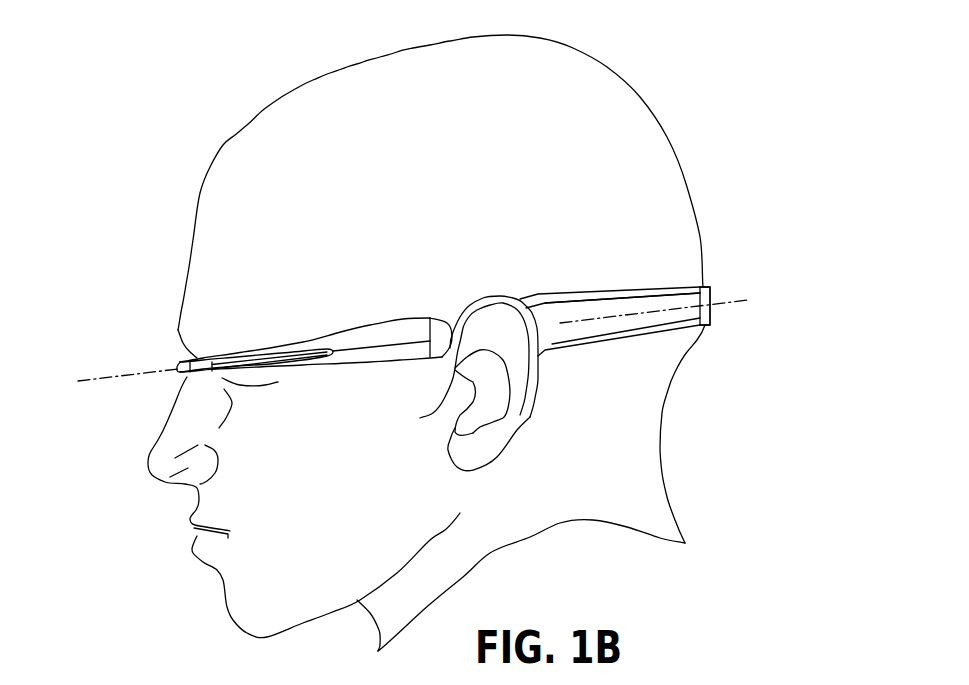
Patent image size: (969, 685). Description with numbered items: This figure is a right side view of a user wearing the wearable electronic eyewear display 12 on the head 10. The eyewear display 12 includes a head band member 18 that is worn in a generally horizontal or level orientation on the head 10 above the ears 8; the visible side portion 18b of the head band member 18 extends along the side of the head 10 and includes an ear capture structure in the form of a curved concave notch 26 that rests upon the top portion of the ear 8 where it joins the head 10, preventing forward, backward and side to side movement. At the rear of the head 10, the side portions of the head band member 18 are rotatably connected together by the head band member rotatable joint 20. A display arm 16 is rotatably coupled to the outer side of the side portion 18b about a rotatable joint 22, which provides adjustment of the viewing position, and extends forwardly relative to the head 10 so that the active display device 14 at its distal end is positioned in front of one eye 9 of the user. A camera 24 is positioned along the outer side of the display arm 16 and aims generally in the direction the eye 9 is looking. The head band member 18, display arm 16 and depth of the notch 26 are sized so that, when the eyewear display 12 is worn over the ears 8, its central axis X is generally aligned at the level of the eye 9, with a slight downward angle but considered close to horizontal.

The ear 8 is at (507, 447).
The eye 9 is at (166, 330).
The head 10 is at (247, 162).
The wearable electronic eyewear display 12 is at (429, 338).
The active display device 14 is at (178, 364).
The display arm 16 is at (352, 330).
The head band member 18 is at (660, 290).
The side portion 18b is at (622, 293).
The head band member rotatable joint 20 is at (711, 313).
The rotatable joint 22 is at (430, 340).
The camera 24 is at (213, 366).
The notch 26 is at (521, 298).
The central axis X is at (97, 387).